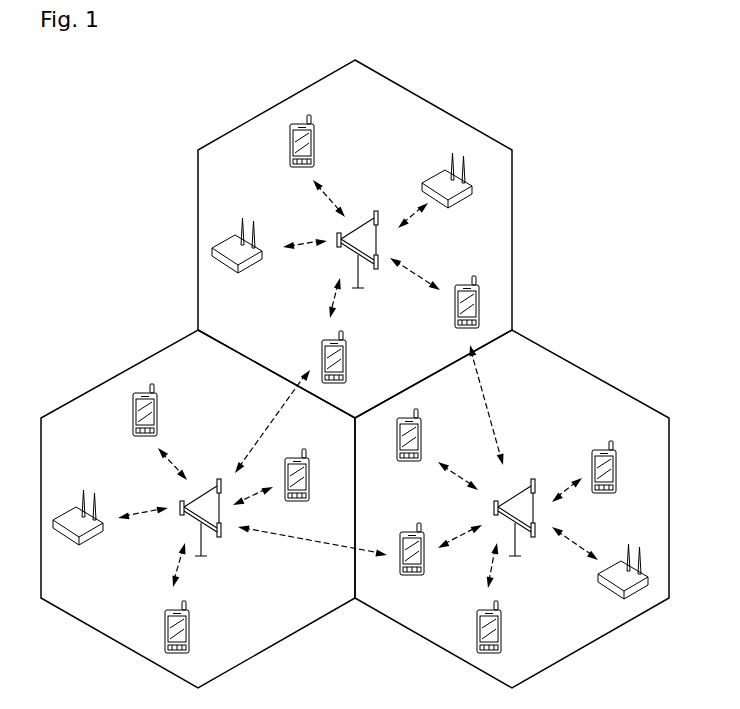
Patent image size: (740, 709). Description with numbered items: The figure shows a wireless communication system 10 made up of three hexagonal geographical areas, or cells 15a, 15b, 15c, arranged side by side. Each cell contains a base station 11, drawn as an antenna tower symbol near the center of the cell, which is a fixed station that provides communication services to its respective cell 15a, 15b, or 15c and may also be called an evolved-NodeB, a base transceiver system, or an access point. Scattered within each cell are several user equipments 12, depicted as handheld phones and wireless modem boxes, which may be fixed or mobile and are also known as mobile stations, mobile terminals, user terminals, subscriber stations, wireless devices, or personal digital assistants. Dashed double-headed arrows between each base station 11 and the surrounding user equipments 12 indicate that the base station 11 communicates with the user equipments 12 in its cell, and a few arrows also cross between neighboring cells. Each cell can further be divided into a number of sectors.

The wireless communication system 10 is at (355, 374).
The base station 11 is at (366, 215).
The user equipment 12 is at (314, 143).
The cell 15a is at (513, 230).
The cell 15b is at (613, 388).
The cell 15c is at (95, 388).